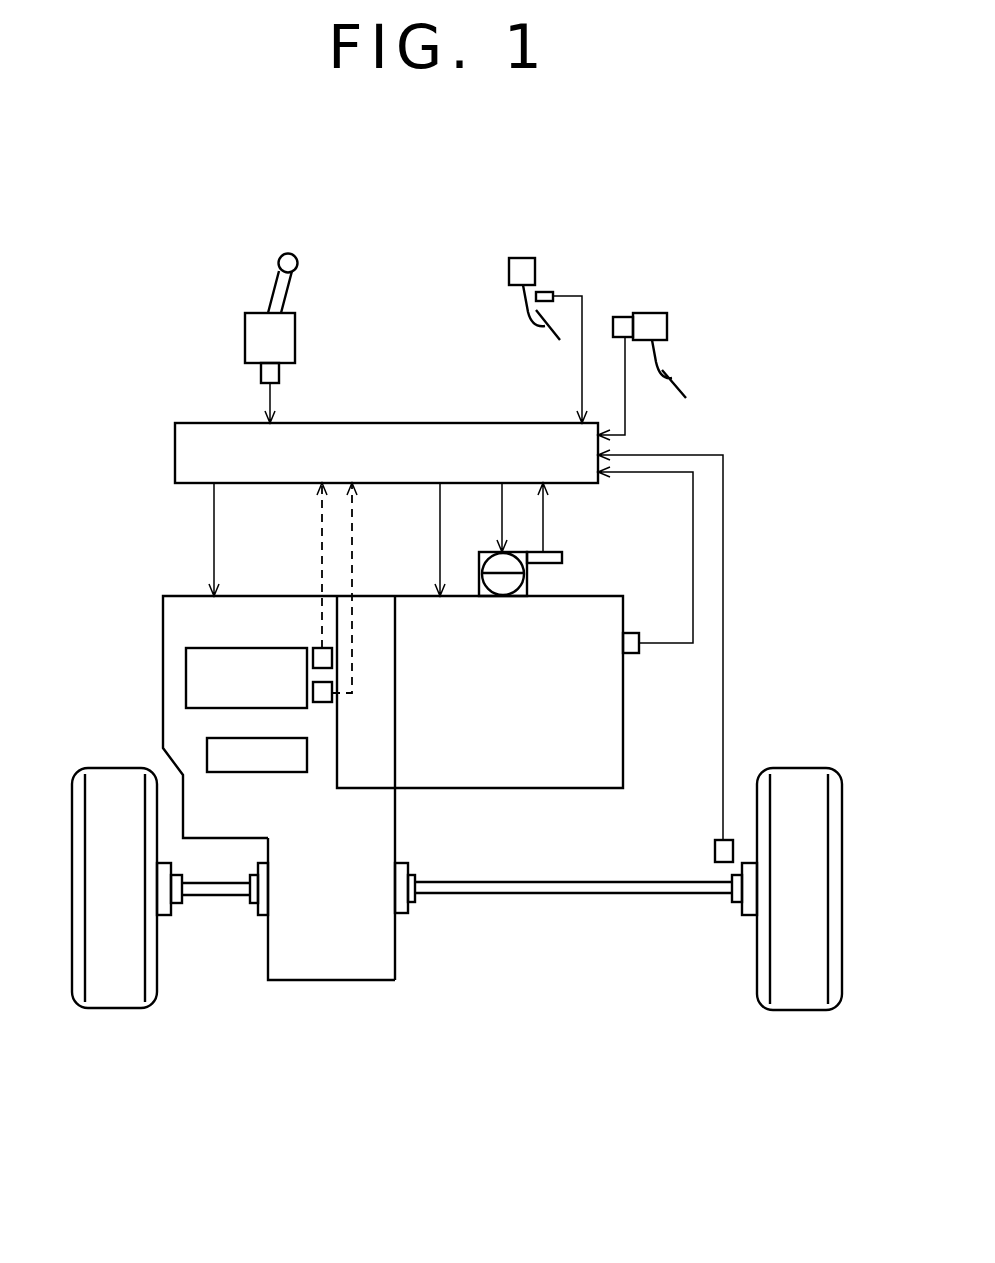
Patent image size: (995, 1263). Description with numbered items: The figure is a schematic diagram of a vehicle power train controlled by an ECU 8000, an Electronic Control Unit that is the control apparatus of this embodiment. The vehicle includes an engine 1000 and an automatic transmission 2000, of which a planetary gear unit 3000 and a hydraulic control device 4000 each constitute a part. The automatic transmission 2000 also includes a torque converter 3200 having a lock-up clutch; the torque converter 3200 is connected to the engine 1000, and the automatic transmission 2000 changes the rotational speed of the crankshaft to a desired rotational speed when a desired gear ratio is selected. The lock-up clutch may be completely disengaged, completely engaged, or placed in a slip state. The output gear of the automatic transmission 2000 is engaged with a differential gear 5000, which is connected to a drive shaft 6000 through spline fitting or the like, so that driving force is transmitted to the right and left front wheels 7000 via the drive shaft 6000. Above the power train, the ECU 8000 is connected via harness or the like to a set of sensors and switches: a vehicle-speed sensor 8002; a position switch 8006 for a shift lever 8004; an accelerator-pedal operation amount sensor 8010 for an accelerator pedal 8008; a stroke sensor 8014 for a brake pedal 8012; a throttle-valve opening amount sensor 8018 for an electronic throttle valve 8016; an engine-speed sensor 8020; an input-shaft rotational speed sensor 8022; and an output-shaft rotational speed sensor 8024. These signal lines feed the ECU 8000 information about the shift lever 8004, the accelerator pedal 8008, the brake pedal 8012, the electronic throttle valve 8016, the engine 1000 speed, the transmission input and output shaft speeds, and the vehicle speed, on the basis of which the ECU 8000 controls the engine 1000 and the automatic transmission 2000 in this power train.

The engine 1000 is at (510, 790).
The automatic transmission 2000 is at (244, 596).
The planetary gear unit 3000 is at (186, 678).
The torque converter 3200 is at (370, 596).
The hydraulic control device 4000 is at (255, 773).
The differential gear 5000 is at (330, 985).
The drive shaft 6000 is at (213, 900).
The front wheels 7000 is at (115, 1010).
The ECU 8000 is at (470, 423).
The vehicle-speed sensor 8002 is at (715, 850).
The shift lever 8004 is at (290, 294).
The position switch 8006 is at (262, 373).
The accelerator pedal 8008 is at (522, 302).
The accelerator-pedal operation amount sensor 8010 is at (545, 292).
The brake pedal 8012 is at (657, 358).
The stroke sensor 8014 is at (625, 317).
The electronic throttle valve 8016 is at (527, 588).
The throttle-valve opening amount sensor 8018 is at (562, 557).
The engine-speed sensor 8020 is at (630, 655).
The input-shaft rotational speed sensor 8022 is at (318, 648).
The output-shaft rotational speed sensor 8024 is at (323, 702).